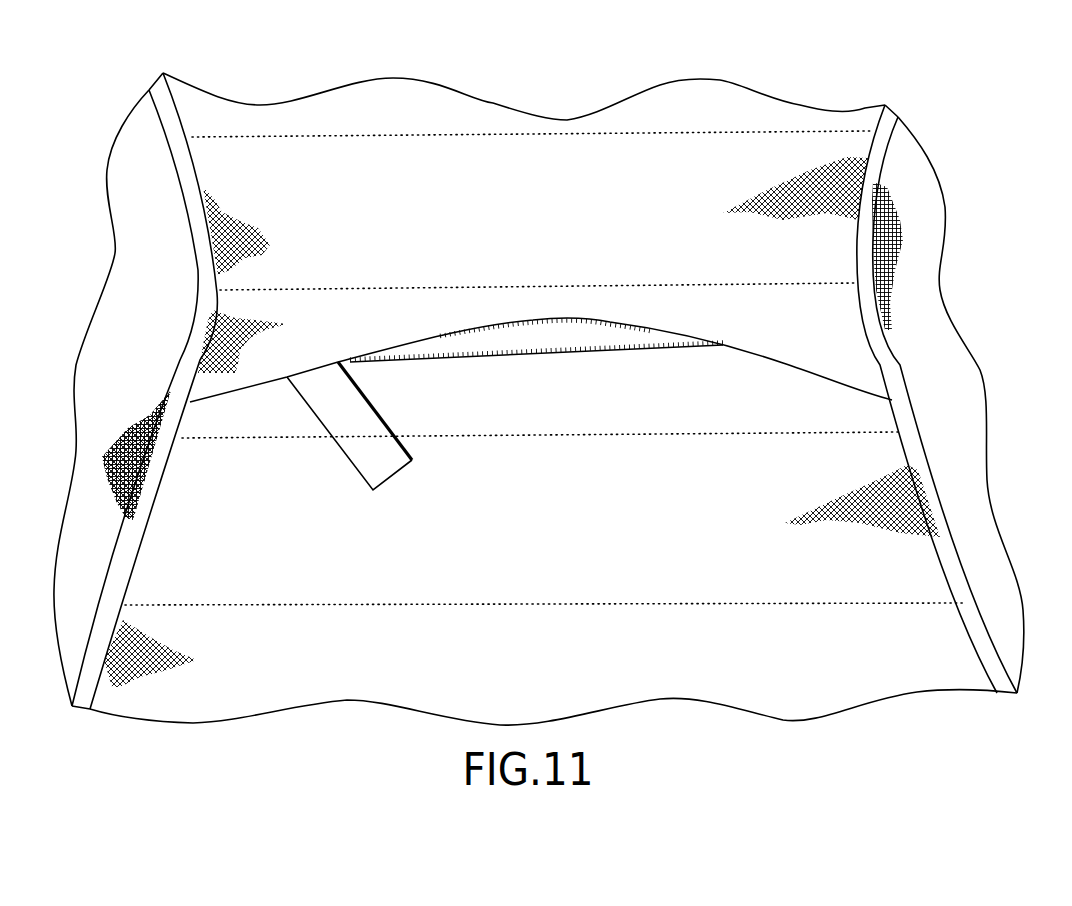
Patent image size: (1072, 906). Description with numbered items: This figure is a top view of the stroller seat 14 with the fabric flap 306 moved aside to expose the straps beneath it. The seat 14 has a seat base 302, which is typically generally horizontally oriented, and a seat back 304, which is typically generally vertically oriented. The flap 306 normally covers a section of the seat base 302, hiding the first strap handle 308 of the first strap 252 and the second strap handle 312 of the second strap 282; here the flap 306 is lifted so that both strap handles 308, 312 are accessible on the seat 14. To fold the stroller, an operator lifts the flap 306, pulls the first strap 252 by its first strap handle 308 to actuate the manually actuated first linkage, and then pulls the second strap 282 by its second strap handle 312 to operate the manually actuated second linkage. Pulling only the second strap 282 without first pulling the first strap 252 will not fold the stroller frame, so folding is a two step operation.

The seat 14 is at (966, 236).
The first strap 252 is at (330, 413).
The second strap 282 is at (537, 342).
The seat base 302 is at (230, 690).
The seat back 304 is at (843, 123).
The flap 306 is at (287, 324).
The first strap handle 308 is at (372, 470).
The second strap handle 312 is at (435, 347).